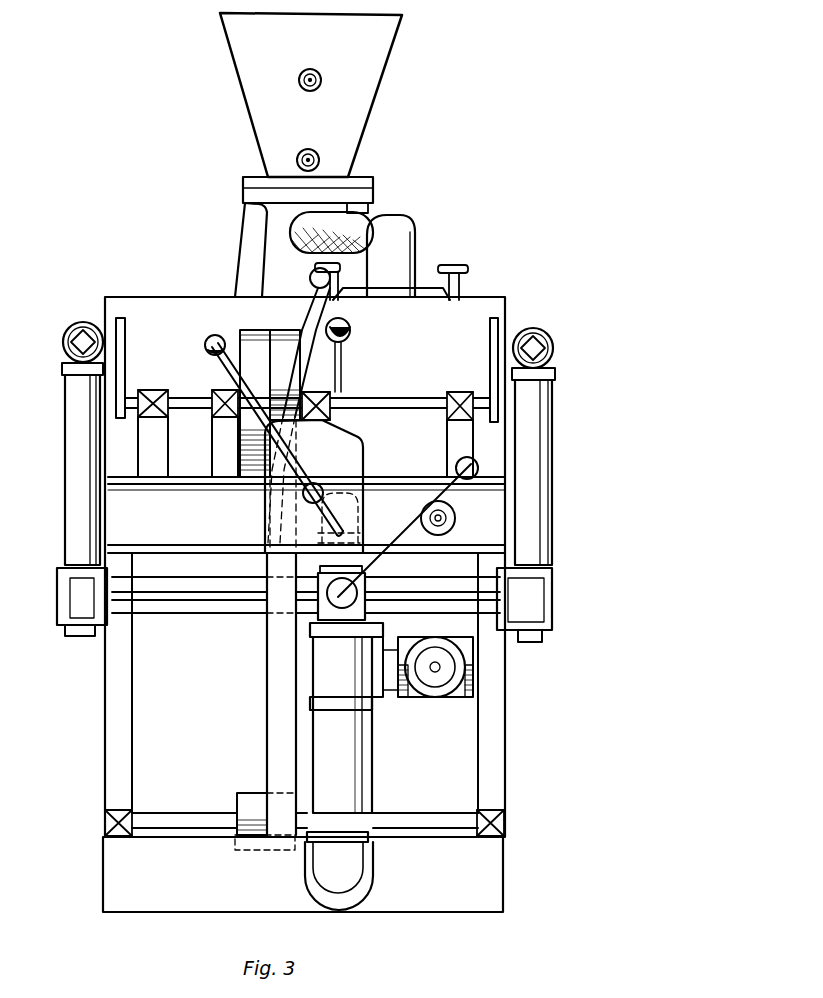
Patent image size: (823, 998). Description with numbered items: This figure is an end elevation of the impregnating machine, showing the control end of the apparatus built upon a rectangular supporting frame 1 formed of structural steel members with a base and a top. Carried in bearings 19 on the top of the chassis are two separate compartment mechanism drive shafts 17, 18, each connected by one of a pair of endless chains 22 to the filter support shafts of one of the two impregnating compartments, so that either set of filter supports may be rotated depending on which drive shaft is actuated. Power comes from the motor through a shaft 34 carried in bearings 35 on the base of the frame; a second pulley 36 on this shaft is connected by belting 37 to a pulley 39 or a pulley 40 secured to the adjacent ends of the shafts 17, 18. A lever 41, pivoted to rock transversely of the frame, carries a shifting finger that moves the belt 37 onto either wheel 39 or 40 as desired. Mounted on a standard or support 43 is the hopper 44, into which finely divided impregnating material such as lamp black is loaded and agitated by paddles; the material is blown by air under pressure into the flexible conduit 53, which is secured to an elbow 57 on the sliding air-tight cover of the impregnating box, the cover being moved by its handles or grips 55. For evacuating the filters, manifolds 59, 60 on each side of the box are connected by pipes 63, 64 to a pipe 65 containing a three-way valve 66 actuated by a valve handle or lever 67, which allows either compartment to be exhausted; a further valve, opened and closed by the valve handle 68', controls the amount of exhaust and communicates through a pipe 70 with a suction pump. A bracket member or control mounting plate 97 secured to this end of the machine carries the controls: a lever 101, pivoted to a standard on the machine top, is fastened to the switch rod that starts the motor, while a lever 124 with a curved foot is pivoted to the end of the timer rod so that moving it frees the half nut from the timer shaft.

The supporting frame 1 is at (490, 738).
The compartment mechanism drive shaft 17 is at (197, 406).
The compartment mechanism drive shaft 18 is at (413, 406).
The bearings 19 is at (226, 392).
The endless chains 22 is at (125, 346).
The shaft 34 is at (408, 825).
The bearings 35 is at (105, 822).
The second pulley 36 is at (258, 796).
The belting 37 is at (283, 688).
The pulley 39 is at (257, 328).
The pulley 40 is at (290, 330).
The lever 41 is at (313, 277).
The standard or support 43 is at (240, 237).
The hopper 44 is at (365, 88).
The flexible conduit 53 is at (360, 225).
The handles or grips 55 is at (445, 268).
The elbow 57 is at (415, 228).
The manifold 59 is at (73, 326).
The manifold 60 is at (545, 330).
The pipe or conduit 63 is at (75, 475).
The pipe or conduit 64 is at (545, 484).
The pipe 65 is at (208, 600).
The three-way valve 66 is at (360, 598).
The valve handle or lever 67 is at (405, 538).
The valve handle 68' is at (428, 684).
The pipe 70 is at (355, 752).
The bracket member or control mounting plate 97 is at (350, 462).
The lever 101 is at (350, 334).
The lever 124 is at (210, 338).